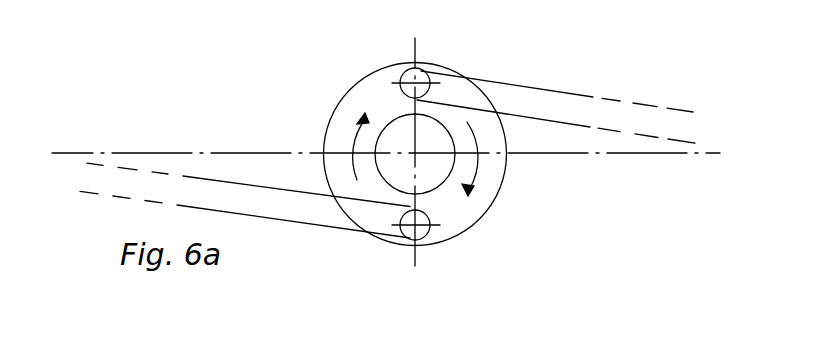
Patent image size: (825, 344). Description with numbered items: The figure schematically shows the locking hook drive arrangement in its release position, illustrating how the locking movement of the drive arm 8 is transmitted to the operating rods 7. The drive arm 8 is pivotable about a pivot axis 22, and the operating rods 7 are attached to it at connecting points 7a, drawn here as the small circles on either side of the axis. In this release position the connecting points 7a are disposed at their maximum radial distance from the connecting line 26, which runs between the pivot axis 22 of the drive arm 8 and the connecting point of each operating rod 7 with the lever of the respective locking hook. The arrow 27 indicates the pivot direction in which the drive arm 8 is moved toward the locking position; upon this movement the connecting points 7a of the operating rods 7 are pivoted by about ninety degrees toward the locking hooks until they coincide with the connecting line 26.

The operating rod 7 is at (208, 187).
The connecting point 7a is at (424, 71).
The drive arm 8 is at (485, 192).
The pivot axis 22 is at (415, 152).
The connecting line 26 is at (712, 152).
The arrow 27 is at (352, 138).